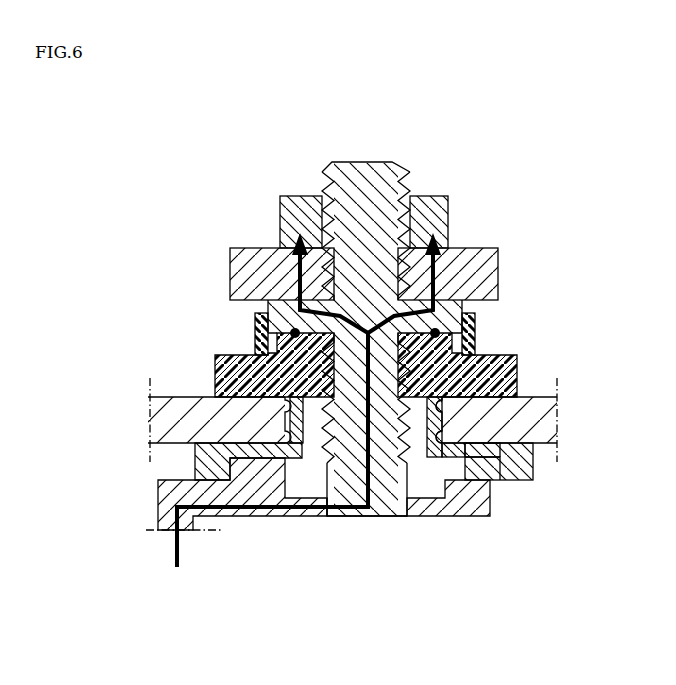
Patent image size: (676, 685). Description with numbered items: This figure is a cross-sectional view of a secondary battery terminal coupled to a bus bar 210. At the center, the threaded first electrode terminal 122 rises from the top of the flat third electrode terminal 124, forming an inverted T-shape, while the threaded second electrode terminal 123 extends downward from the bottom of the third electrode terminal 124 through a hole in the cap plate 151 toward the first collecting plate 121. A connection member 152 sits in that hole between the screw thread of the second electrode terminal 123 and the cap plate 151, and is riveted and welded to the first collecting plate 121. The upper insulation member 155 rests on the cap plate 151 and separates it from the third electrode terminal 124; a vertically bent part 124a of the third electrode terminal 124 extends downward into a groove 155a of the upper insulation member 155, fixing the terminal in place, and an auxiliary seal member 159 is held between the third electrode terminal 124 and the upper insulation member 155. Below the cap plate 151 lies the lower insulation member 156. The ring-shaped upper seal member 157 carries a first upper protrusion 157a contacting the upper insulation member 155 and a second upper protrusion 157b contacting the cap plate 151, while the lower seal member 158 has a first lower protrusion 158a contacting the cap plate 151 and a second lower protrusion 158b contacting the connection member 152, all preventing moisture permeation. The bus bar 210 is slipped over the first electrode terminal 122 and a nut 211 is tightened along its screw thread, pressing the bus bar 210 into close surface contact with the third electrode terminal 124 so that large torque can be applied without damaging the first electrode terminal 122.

The first collecting plate 121 is at (462, 507).
The first electrode terminal 122 is at (355, 177).
The second electrode terminal 123 is at (381, 466).
The third electrode terminal 124 is at (296, 316).
The vertically bent part 124a is at (257, 347).
The cap plate 151 is at (158, 417).
The connection member 152 is at (302, 500).
The upper insulation member 155 is at (217, 378).
The groove 155a is at (480, 322).
The lower insulation member 156 is at (203, 465).
The upper seal member 157 is at (493, 390).
The first upper protrusion 157a is at (492, 358).
The second upper protrusion 157b is at (460, 405).
The lower seal member 158 is at (500, 453).
The first lower protrusion 158a is at (460, 440).
The second lower protrusion 158b is at (463, 463).
The auxiliary seal member 159 is at (472, 282).
The bus bar 210 is at (475, 247).
The nut 211 is at (433, 195).